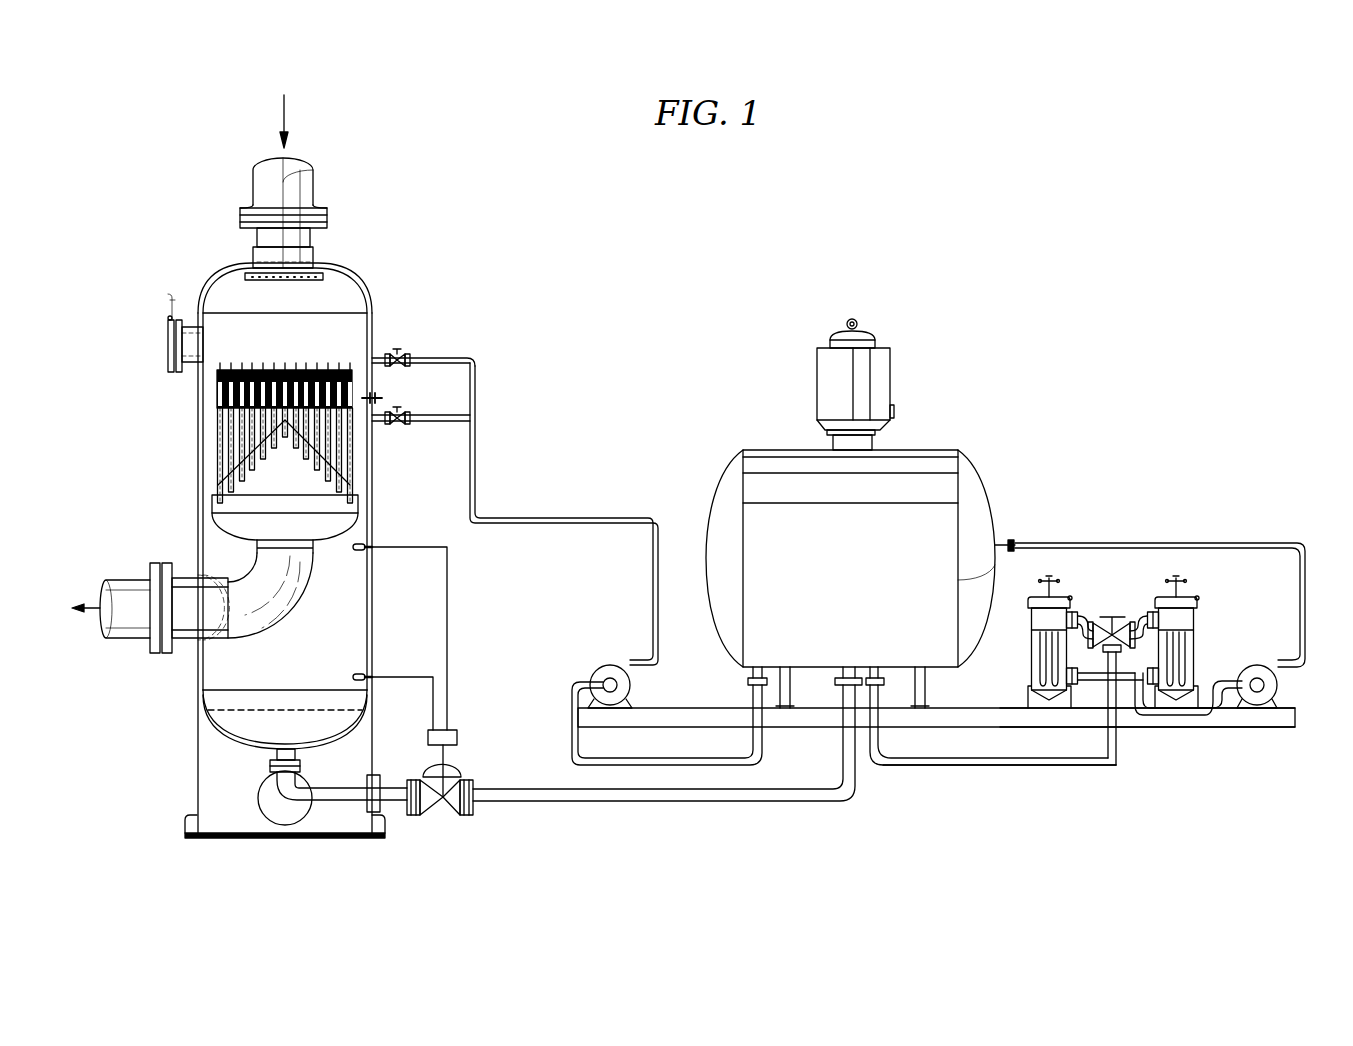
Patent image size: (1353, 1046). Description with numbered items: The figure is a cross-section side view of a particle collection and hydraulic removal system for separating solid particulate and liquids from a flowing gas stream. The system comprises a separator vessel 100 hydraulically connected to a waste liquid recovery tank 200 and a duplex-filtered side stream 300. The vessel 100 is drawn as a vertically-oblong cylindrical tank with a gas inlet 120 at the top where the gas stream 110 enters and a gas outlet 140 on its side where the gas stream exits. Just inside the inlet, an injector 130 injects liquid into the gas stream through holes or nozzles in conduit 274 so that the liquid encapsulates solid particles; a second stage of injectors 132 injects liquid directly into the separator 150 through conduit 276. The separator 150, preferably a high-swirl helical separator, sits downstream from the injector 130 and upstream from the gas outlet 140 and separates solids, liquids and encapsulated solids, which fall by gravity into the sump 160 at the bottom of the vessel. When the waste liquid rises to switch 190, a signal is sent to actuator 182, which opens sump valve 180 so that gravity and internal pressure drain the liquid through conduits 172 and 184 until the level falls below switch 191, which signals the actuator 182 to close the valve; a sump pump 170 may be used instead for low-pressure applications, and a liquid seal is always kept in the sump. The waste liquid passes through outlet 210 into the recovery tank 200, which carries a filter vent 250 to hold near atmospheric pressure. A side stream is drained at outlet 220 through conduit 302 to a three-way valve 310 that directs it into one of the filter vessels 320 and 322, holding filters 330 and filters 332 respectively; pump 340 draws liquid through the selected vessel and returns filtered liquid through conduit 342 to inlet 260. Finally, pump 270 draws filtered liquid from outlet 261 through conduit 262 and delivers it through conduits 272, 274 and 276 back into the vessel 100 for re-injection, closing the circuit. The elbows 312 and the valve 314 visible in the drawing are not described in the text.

The separator vessel 100 is at (200, 283).
The gas stream 110 is at (287, 109).
The gas inlet 120 is at (315, 262).
The injector 130 is at (310, 283).
The injectors 132 is at (357, 424).
The gas outlet 140 is at (192, 568).
The separator 150 is at (222, 438).
The sump 160 is at (248, 700).
The sump pump 170 is at (272, 823).
The conduit 172 is at (346, 786).
The sump valve 180 is at (478, 815).
The actuator 182 is at (458, 770).
The conduit 184 is at (710, 812).
The switch 190 is at (355, 547).
The switch 191 is at (355, 677).
The waste liquid recovery tank 200 is at (745, 450).
The outlet 210 is at (850, 657).
The outlet 220 is at (877, 660).
The filter vent 250 is at (832, 327).
The inlet 260 is at (995, 544).
The outlet 261 is at (760, 656).
The conduit 262 is at (645, 758).
The pump 270 is at (597, 668).
The conduit 272 is at (578, 523).
The conduit 274 is at (465, 358).
The conduit 276 is at (483, 420).
The duplex-filtered side stream 300 is at (1055, 791).
The conduit 302 is at (973, 768).
The three-way valve 310 is at (1148, 629).
The connecting elbow 312 is at (1168, 608).
The three-way valve 314 is at (1108, 618).
The filter vessel 320 is at (1197, 603).
The filter vessel 322 is at (1000, 580).
The filters 330 is at (1192, 660).
The filters 332 is at (1038, 653).
The pump 340 is at (1280, 683).
The conduit 342 is at (1228, 543).